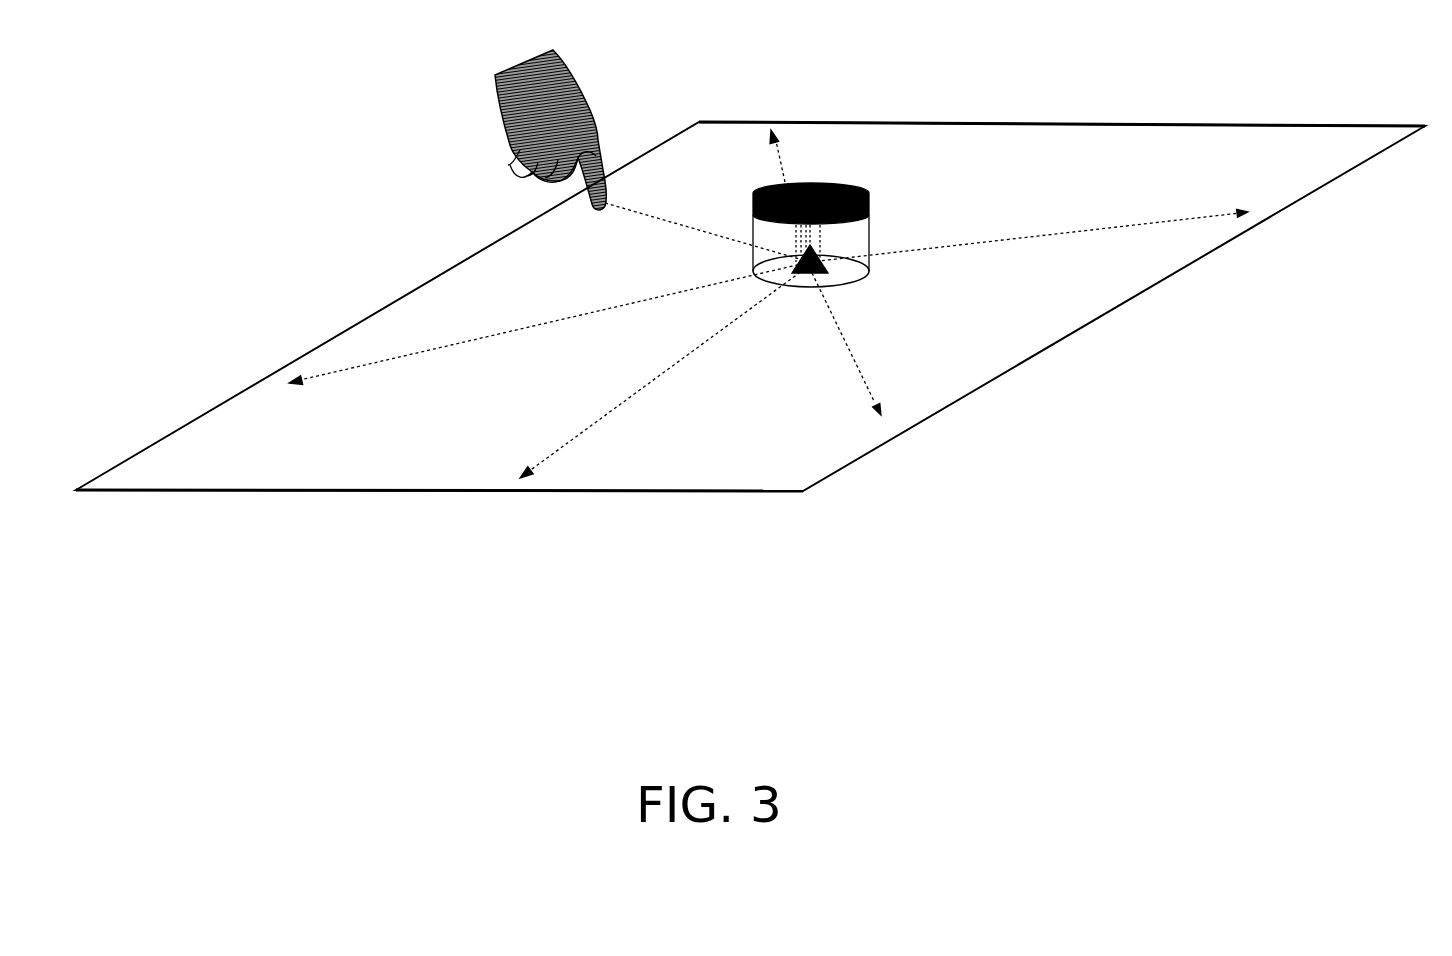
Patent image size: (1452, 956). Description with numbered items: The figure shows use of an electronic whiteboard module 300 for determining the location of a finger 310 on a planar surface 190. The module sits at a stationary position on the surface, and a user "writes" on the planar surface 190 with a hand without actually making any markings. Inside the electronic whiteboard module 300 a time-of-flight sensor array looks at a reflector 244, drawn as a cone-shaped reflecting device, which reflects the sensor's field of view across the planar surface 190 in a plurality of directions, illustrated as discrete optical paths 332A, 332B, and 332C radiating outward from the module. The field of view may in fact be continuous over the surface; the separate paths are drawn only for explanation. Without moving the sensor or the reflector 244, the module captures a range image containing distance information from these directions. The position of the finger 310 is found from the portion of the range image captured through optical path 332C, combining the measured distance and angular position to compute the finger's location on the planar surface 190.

The planar surface 190 is at (708, 497).
The finger 310 is at (602, 158).
The electronic whiteboard module 300 is at (875, 233).
The reflector 244 is at (830, 268).
The optical path 332C is at (628, 217).
The optical path 332B is at (466, 351).
The optical path 332A is at (644, 391).